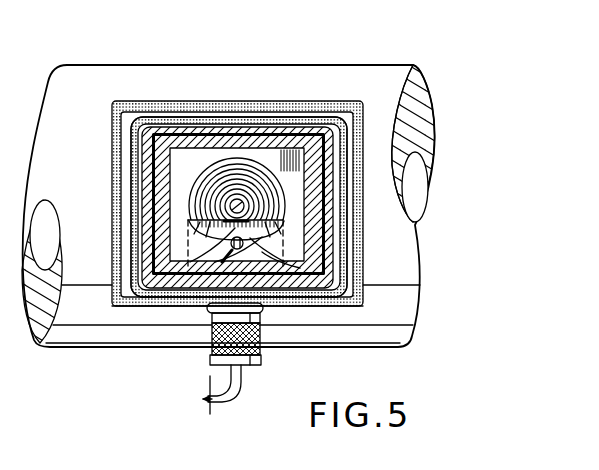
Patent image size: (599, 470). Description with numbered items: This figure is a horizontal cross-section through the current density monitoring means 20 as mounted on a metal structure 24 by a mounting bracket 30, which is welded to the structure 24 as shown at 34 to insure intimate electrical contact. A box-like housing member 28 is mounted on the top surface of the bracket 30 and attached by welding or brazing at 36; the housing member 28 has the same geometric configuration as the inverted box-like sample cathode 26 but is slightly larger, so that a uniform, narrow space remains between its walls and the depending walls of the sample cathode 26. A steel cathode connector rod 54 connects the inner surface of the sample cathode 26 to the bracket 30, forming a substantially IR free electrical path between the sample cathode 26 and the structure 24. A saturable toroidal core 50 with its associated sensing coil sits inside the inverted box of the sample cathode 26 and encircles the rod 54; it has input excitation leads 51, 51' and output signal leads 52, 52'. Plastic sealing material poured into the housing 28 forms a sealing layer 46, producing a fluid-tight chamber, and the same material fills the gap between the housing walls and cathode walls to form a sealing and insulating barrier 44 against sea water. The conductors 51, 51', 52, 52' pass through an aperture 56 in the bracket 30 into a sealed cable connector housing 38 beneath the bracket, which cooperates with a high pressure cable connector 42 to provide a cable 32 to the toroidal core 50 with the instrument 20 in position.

The current density monitoring means 20 is at (86, 81).
The metal structure 24 is at (396, 65).
The sample cathode 26 is at (192, 146).
The housing member 28 is at (232, 128).
The mounting bracket 30 is at (343, 125).
The cable 32 is at (242, 379).
The welding 34 is at (368, 127).
The welding or brazing 36 is at (133, 160).
The cable connector housing 38 is at (158, 225).
The high pressure cable connector 42 is at (228, 348).
The sealing and insulating barrier 44 is at (161, 134).
The sealing layer 46 is at (280, 162).
The saturable toroidal core 50 is at (272, 209).
The input excitation lead 51 is at (320, 257).
The input excitation lead 51' is at (328, 280).
The output signal lead 52 is at (154, 245).
The output signal lead 52' is at (167, 259).
The cathode connector rod 54 is at (238, 204).
The aperture 56 is at (125, 292).